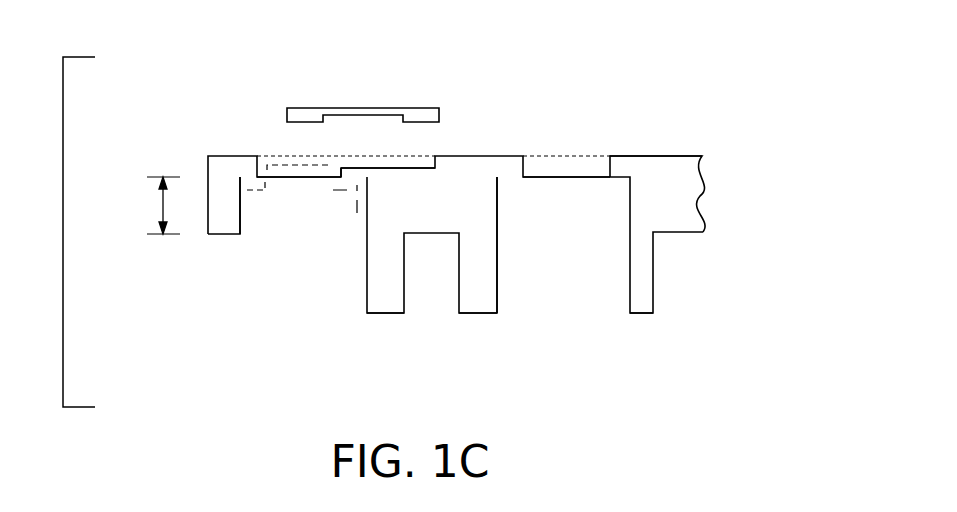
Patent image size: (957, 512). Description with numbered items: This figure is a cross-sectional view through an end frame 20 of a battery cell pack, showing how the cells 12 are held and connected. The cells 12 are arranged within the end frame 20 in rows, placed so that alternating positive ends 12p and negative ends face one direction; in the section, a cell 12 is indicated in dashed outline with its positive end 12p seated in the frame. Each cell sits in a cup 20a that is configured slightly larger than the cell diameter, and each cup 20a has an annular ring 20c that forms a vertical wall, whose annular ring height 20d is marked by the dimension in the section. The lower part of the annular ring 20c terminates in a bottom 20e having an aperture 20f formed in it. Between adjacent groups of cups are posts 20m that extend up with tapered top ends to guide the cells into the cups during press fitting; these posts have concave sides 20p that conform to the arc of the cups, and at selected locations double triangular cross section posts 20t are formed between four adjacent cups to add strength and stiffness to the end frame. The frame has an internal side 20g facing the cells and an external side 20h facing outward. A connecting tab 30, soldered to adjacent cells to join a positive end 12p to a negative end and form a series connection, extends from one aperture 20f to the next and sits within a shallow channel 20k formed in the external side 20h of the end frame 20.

The end frame 20 is at (670, 168).
The cell 12 is at (335, 165).
The positive end 12p is at (292, 160).
The connecting tab 30 is at (370, 108).
The shallow channel 20k is at (398, 164).
The external side 20h is at (633, 136).
The annular ring height 20d is at (157, 200).
The annular ring 20c is at (240, 210).
The cup 20a is at (293, 225).
The bottom 20e is at (352, 170).
The double triangular cross section post 20t is at (387, 300).
The post 20m is at (477, 300).
The concave side 20p is at (498, 277).
The aperture 20f is at (568, 182).
The internal side 20g is at (640, 358).